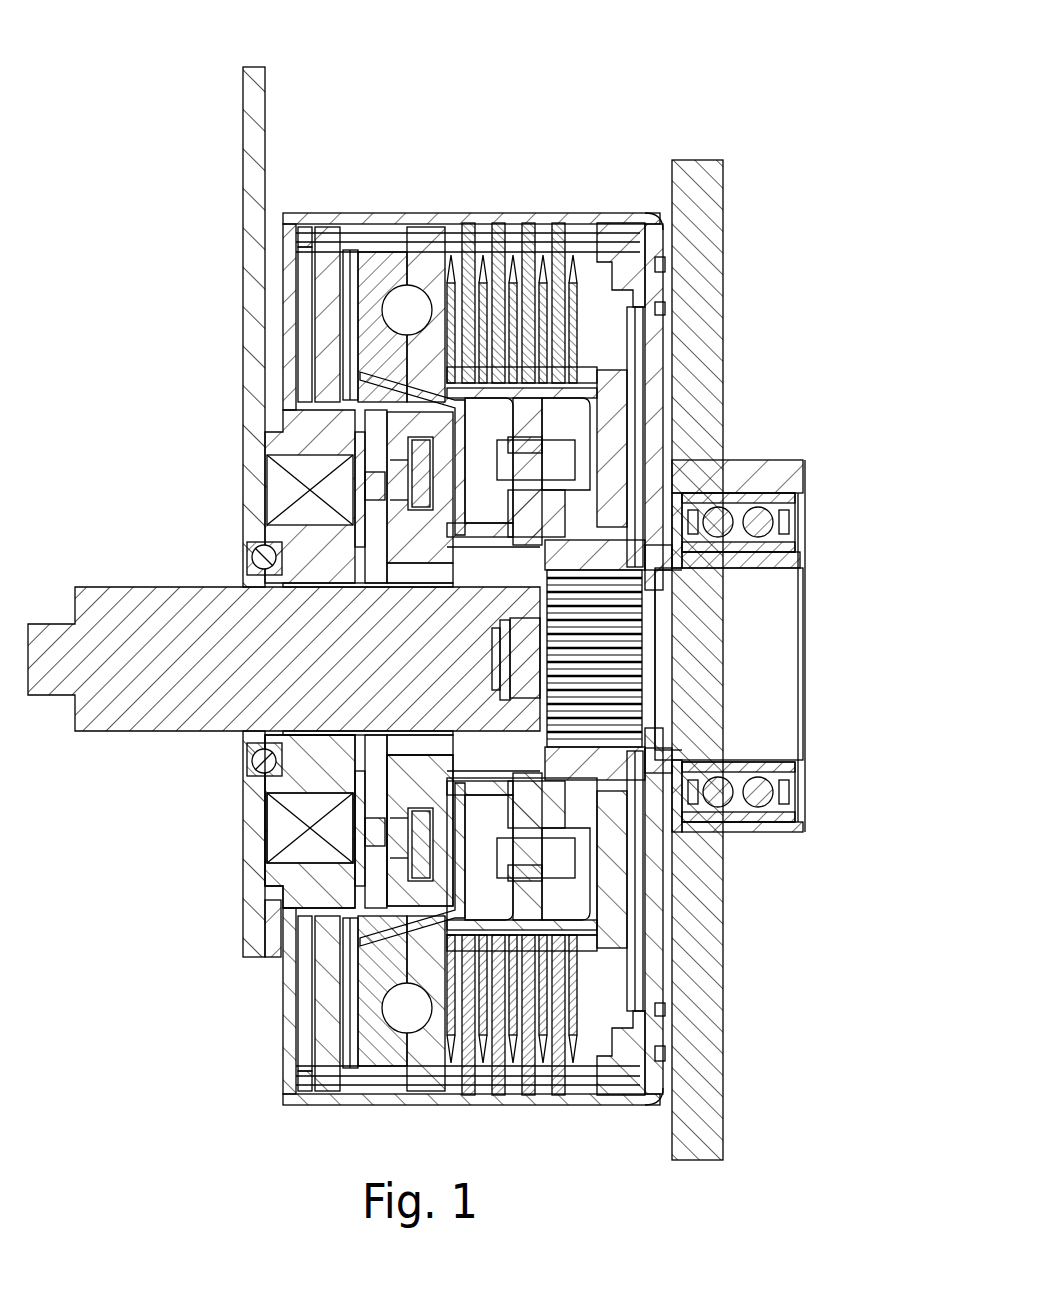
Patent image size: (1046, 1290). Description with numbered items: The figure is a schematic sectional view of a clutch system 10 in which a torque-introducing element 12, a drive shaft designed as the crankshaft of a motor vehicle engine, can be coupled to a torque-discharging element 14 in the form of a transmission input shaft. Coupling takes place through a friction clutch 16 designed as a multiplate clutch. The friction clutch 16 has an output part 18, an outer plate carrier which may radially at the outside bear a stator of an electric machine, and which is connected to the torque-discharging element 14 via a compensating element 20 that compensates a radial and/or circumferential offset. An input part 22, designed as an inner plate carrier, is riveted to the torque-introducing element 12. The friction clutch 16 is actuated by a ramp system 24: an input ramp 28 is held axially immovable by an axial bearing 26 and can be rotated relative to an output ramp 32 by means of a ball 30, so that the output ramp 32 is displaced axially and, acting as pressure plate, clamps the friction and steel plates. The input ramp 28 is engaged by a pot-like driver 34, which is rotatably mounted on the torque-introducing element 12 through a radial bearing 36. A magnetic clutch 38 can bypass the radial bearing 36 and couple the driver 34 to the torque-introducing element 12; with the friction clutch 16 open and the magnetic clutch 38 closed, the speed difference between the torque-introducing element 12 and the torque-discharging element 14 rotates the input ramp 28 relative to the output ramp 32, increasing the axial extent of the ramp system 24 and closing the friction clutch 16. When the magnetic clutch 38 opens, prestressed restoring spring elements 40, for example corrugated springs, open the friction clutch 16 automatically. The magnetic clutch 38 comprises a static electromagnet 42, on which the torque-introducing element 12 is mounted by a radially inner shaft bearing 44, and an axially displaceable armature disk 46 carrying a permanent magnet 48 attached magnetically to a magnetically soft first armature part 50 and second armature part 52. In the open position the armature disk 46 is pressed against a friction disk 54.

The clutch system 10 is at (146, 86).
The torque-introducing element 12 is at (103, 618).
The torque-discharging element 14 is at (808, 745).
The friction clutch 16 is at (522, 214).
The output part 18 is at (611, 222).
The compensating element 20 is at (640, 438).
The input part 22 is at (632, 392).
The ramp system 24 is at (390, 244).
The axial bearing 26 is at (350, 303).
The input ramp 28 is at (330, 320).
The ball 30 is at (407, 310).
The output ramp 32 is at (417, 248).
The driver 34 is at (372, 383).
The radial bearing 36 is at (550, 778).
The magnetic clutch 38 is at (300, 485).
The restoring spring elements 40 is at (545, 243).
The electromagnet 42 is at (362, 488).
The shaft bearing 44 is at (256, 557).
The armature disk 46 is at (640, 548).
The permanent magnet 48 is at (430, 790).
The first armature part 50 is at (400, 858).
The second armature part 52 is at (360, 770).
The friction disk 54 is at (412, 538).